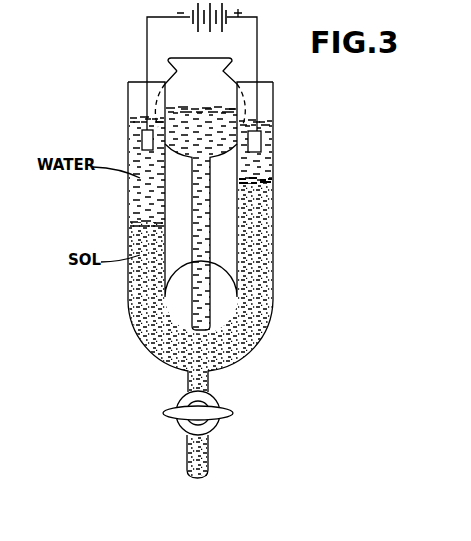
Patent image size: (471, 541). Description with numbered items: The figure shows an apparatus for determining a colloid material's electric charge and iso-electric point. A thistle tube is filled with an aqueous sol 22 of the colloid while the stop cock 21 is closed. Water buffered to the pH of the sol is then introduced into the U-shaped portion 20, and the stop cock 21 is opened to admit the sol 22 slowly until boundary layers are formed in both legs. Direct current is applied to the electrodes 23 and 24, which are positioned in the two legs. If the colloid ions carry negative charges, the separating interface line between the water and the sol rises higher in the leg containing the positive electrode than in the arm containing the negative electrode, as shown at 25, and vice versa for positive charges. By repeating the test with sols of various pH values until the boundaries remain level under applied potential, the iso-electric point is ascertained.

The U-shaped portion 20 is at (267, 100).
The stop cock 21 is at (202, 402).
The sol 22 is at (209, 107).
The electrode 23 is at (143, 135).
The electrode 24 is at (262, 142).
The separating interface line 25 is at (263, 182).